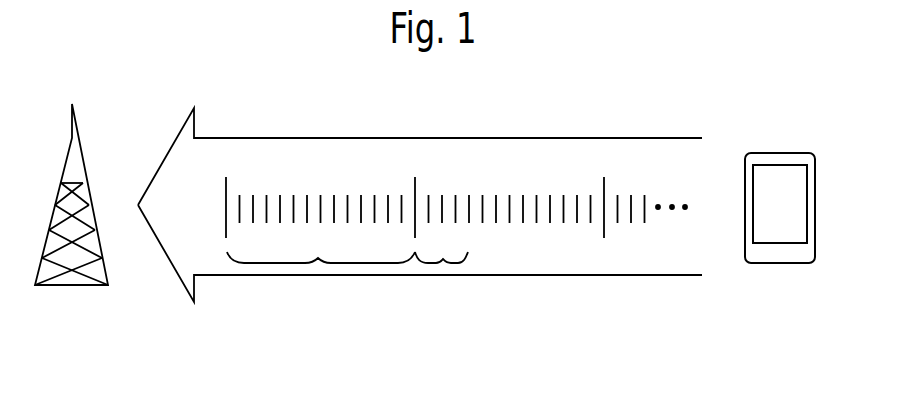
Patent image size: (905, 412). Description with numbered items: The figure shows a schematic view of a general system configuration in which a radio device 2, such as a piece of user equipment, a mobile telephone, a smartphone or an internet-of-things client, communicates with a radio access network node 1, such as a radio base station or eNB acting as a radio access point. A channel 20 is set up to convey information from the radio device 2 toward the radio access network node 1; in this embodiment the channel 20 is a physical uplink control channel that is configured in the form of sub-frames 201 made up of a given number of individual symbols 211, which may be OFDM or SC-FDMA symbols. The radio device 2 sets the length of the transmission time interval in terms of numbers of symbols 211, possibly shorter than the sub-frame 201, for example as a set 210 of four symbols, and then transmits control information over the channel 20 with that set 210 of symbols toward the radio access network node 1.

The radio access network node 1 is at (92, 278).
The radio device 2 is at (776, 265).
The channel 20 is at (229, 275).
The sub-frame 201 is at (318, 258).
The set of symbols 210 is at (443, 259).
The symbols 211 is at (302, 202).